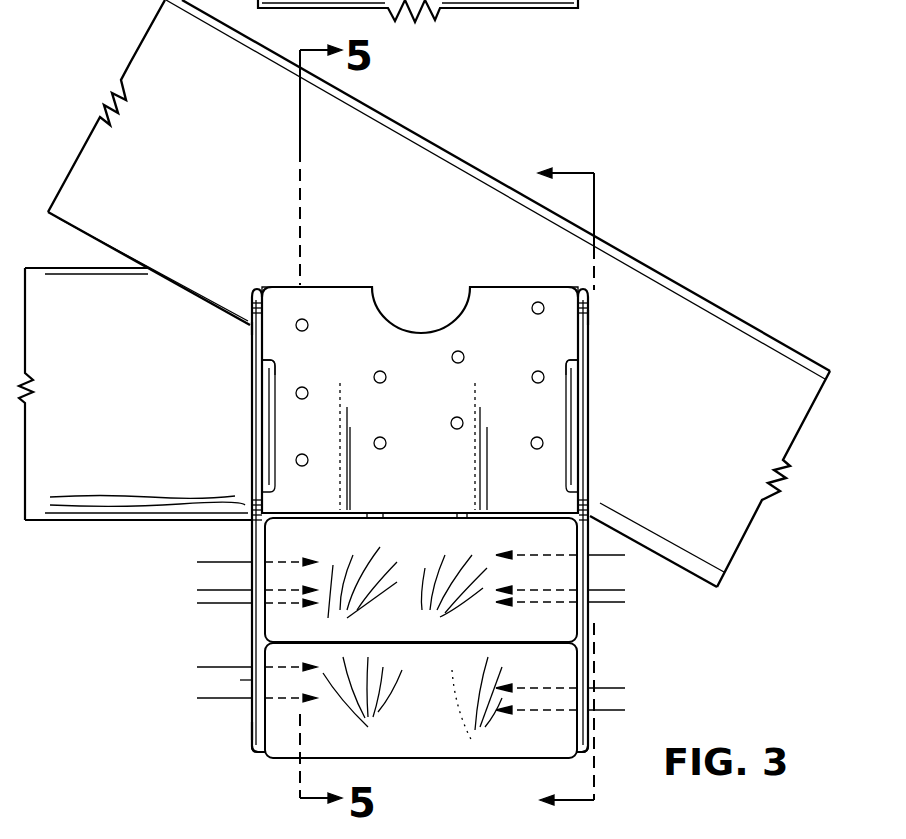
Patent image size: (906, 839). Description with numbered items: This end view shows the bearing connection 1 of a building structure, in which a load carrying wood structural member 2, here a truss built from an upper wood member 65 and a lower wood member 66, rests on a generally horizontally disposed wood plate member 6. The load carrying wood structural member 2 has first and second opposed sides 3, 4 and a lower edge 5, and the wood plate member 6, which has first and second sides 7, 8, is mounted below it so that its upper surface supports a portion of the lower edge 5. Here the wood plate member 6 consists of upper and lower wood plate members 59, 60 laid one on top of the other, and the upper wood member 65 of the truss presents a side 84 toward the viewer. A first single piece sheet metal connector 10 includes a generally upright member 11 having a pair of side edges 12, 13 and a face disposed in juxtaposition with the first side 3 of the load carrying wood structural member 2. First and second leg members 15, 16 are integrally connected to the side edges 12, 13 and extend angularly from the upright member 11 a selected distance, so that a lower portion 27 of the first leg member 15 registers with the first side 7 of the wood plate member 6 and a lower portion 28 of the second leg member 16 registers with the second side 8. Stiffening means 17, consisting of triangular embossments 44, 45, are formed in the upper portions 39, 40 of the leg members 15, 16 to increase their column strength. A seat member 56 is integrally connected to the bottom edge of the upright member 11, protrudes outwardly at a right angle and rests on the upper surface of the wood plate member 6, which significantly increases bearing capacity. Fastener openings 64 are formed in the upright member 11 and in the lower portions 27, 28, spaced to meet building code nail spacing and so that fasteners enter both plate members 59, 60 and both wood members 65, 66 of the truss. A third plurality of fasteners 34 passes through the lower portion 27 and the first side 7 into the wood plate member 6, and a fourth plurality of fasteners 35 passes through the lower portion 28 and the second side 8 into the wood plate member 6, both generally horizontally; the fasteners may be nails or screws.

The bearing connection 1 is at (674, 210).
The load carrying wood structural member 2 is at (24, 350).
The first side 3 is at (100, 326).
The second side 4 is at (552, 489).
The lower edge 5 is at (67, 521).
The wood plate member 6 is at (403, 770).
The first side 7 is at (263, 753).
The second side 8 is at (593, 755).
The first single piece sheet metal connector 10 is at (238, 731).
The generally upright member 11 is at (324, 278).
The side edge 12 is at (262, 292).
The side edge 13 is at (580, 292).
The first leg member 15 is at (238, 636).
The second leg member 16 is at (604, 613).
The stiffening means 17 is at (285, 366).
The lower portion of first leg member 27 is at (240, 680).
The lower portion of second leg member 28 is at (590, 680).
The third plurality of fasteners 34 is at (197, 562).
The fourth plurality of fasteners 35 is at (625, 557).
The upper portion of first leg member 39 is at (250, 332).
The upper portion of second leg member 40 is at (590, 320).
The triangular embossment 44 is at (268, 428).
The triangular embossment 45 is at (573, 414).
The seat member 56 is at (382, 521).
The upper wood plate member 59 is at (445, 554).
The lower wood plate member 60 is at (428, 708).
The fastener openings 64 is at (452, 360).
The upper wood member 65 is at (107, 152).
The lower wood member 66 is at (38, 288).
The side of upper wood member 84 is at (712, 405).